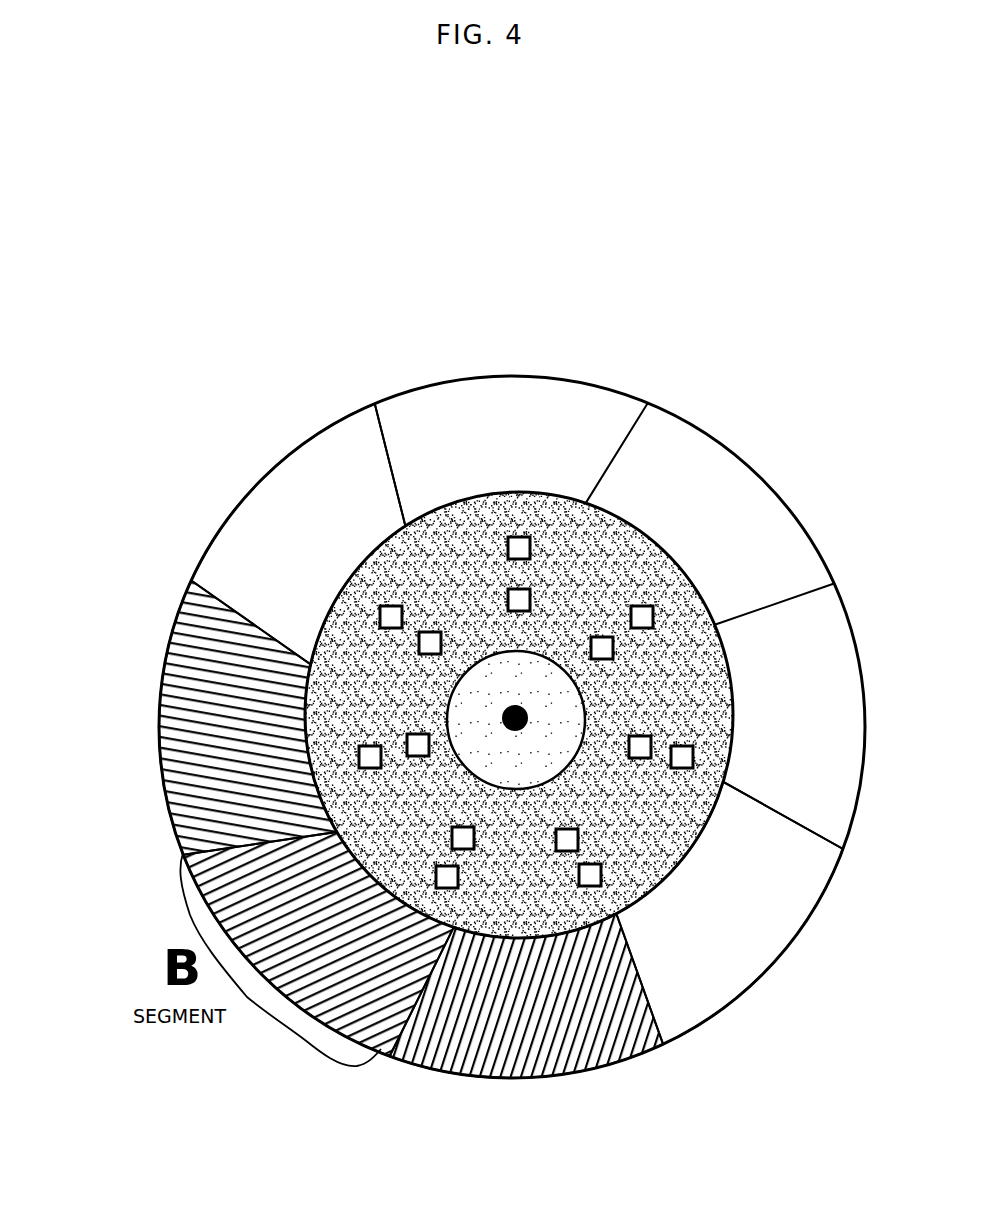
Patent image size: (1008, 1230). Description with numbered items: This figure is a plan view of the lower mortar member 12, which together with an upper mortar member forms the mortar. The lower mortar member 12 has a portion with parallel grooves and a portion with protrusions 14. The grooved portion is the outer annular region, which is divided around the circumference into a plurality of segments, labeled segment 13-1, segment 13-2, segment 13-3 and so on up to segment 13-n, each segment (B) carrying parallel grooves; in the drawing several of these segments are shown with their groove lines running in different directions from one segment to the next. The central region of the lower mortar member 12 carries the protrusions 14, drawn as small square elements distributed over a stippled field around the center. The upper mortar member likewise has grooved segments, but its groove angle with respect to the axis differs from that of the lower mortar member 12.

The lower mortar member 12 is at (491, 275).
The segment having parallel grooves 13-1 is at (380, 1023).
The segment having parallel grooves 13-2 is at (527, 1078).
The segment having parallel grooves 13-3 is at (748, 958).
The segment having parallel grooves 13-n is at (157, 717).
The protrusions 14 is at (652, 608).